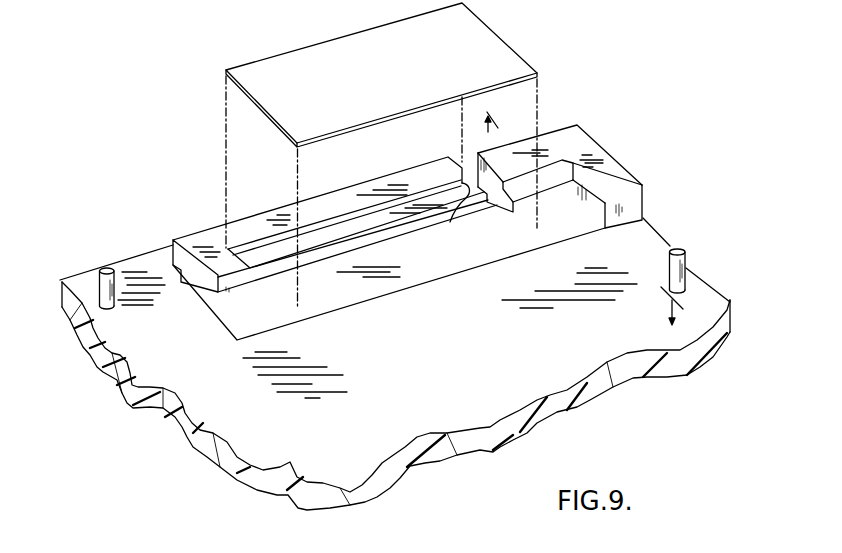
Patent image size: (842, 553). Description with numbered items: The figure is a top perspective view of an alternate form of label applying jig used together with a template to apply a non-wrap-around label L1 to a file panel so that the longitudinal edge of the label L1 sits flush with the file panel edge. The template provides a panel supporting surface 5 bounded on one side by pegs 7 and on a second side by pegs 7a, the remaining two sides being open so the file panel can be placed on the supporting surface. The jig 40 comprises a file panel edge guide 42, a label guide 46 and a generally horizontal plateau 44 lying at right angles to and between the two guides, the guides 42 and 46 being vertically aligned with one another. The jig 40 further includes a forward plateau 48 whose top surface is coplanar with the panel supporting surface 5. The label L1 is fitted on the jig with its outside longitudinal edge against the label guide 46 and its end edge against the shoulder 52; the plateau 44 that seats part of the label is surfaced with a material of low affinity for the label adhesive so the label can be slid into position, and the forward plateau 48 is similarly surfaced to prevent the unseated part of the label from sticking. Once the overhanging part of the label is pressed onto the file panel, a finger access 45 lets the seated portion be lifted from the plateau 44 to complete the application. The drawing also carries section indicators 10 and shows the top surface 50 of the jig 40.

The panel supporting surface 5 is at (562, 380).
The pegs 7 is at (110, 268).
The pegs 7a is at (684, 270).
The section line indicator 10 is at (571, 218).
The jig 40 is at (603, 153).
The file panel edge guide 42 is at (172, 262).
The horizontal plateau 44 is at (272, 257).
The finger access 45 is at (450, 222).
The label guide 46 is at (238, 247).
The forward plateau 48 is at (323, 297).
The top surface of slide block 50 is at (570, 155).
The shoulder 52 is at (607, 205).
The label L1 is at (508, 53).